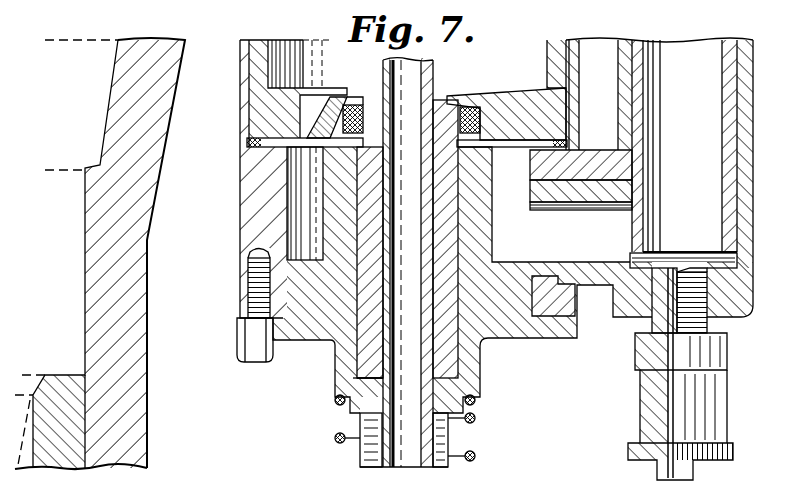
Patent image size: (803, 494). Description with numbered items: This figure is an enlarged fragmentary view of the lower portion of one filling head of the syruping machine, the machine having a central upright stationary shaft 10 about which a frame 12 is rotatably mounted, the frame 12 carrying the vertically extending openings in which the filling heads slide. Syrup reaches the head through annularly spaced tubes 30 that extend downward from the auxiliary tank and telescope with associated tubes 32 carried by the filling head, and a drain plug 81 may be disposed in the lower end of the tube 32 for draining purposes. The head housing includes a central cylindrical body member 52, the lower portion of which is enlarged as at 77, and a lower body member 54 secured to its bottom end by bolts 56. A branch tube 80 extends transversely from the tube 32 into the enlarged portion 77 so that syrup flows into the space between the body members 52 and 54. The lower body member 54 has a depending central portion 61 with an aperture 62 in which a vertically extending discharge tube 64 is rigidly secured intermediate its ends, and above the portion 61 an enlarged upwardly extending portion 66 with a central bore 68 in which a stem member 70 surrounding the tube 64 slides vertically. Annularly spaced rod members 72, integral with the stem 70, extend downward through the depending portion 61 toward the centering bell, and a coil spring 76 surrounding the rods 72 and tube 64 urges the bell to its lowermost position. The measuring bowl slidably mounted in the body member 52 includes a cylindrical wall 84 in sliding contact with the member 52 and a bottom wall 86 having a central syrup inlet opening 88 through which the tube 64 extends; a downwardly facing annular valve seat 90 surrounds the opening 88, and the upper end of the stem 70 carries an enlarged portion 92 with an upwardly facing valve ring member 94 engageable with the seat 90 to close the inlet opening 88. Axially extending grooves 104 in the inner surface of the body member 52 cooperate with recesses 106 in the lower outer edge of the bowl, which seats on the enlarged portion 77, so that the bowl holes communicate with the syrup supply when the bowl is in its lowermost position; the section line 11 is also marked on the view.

The central upright stationary shaft 10 is at (640, 64).
The section line 11- 11 is at (560, 385).
The frame 12 is at (147, 268).
The tubes 30 is at (727, 45).
The tubes 32 is at (746, 116).
The central cylindrical body member 52 is at (245, 42).
The lower body member 54 is at (514, 334).
The bolts 56 is at (256, 353).
The depending central portion 61 is at (352, 357).
The aperture 62 is at (338, 435).
The discharge tube 64 is at (436, 76).
The enlarged upwardly extending portion 66 is at (327, 167).
The central bore 68 is at (452, 185).
The stem member 70 is at (447, 216).
The rod members 72 is at (361, 452).
The coil spring 76 is at (476, 458).
The enlarged portion 77 is at (568, 160).
The branch tube 80 is at (585, 209).
The drain plug 81 is at (712, 397).
The cylindrical wall 84 is at (259, 46).
The bottom wall 86 is at (312, 74).
The syrup inlet opening 88 is at (456, 92).
The annular valve seat 90 is at (340, 100).
The enlarged portion 92 is at (480, 133).
The valve ring member 94 is at (566, 102).
The grooves 104 is at (243, 107).
The recesses 106 is at (248, 150).